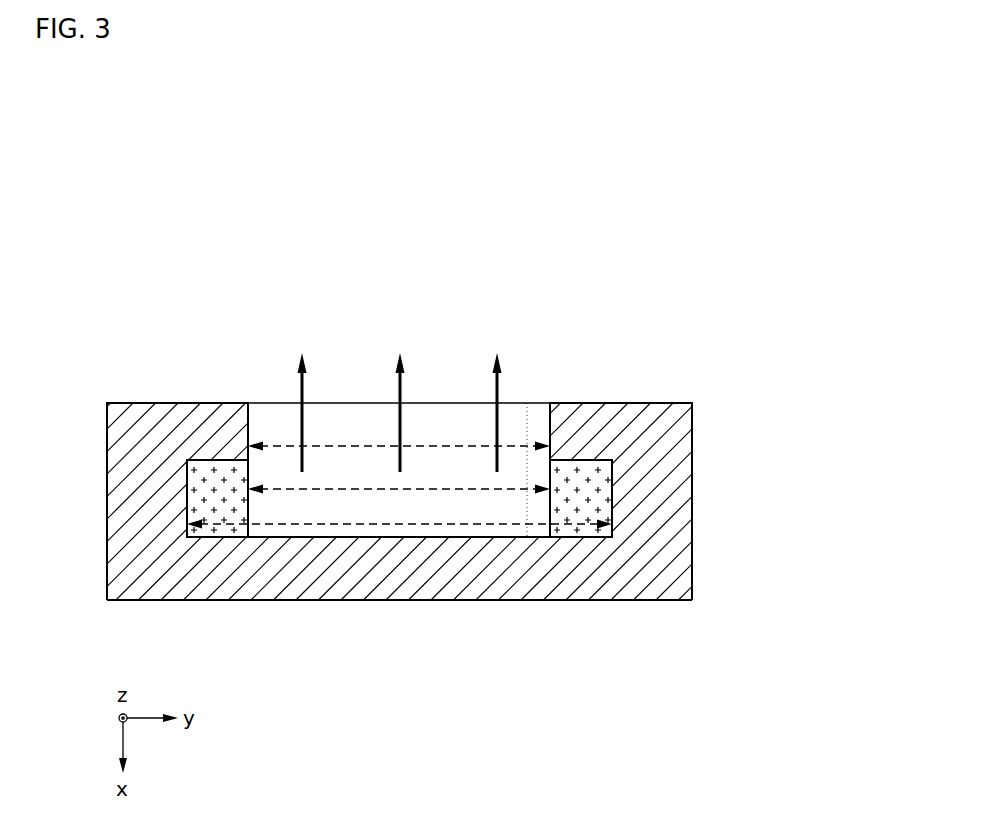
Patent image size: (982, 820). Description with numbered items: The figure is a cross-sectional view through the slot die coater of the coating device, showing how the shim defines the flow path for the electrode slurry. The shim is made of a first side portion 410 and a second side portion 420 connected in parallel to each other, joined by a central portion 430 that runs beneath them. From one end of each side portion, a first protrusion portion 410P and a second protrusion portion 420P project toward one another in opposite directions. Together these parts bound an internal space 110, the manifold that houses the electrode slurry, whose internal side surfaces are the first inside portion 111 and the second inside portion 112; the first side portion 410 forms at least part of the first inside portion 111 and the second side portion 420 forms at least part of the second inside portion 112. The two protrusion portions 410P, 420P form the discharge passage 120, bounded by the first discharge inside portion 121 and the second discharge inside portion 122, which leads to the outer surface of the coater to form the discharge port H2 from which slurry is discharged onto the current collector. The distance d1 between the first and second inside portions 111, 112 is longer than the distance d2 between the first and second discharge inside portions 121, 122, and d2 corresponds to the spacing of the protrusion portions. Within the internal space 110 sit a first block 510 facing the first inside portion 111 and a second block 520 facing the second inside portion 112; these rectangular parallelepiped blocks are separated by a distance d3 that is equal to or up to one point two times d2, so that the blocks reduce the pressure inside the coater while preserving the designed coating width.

The internal space 110 is at (435, 535).
The first inside portion 111 is at (187, 521).
The second inside portion 112 is at (612, 508).
The discharge passage 120 is at (277, 415).
The first discharge inside portion 121 is at (240, 418).
The second discharge inside portion 122 is at (565, 415).
The first side portion 410 is at (137, 490).
The first protrusion portion 410P is at (222, 440).
The second side portion 420 is at (638, 478).
The second protrusion portion 420P is at (605, 418).
The central portion 430 is at (487, 580).
The first block 510 is at (242, 535).
The second block 520 is at (587, 535).
The discharge port H2 is at (527, 415).
The distance between first inside portion and second inside portion d1 is at (400, 510).
The distance between first discharge inside portion and second discharge inside port d2 is at (399, 435).
The distance between first block and second block d3 is at (399, 479).